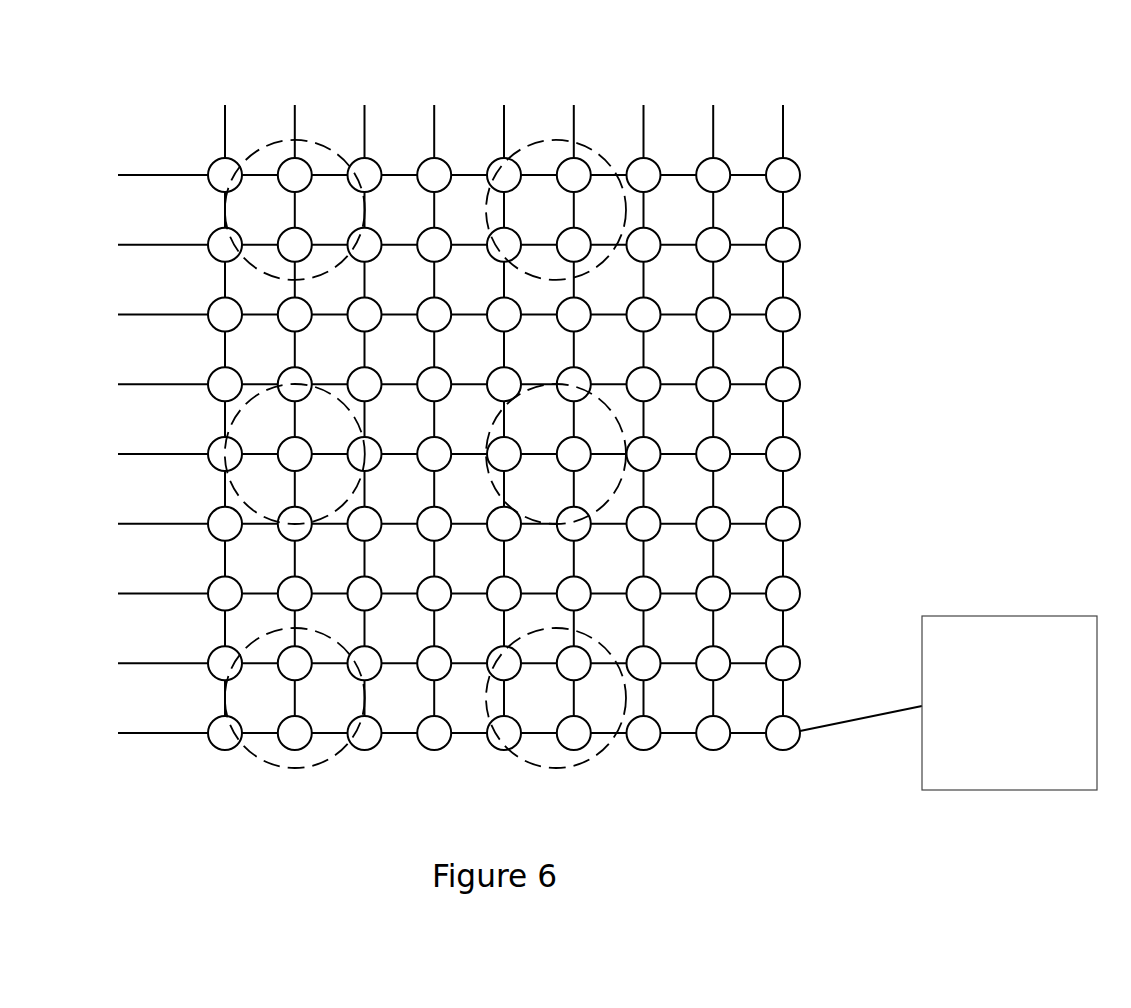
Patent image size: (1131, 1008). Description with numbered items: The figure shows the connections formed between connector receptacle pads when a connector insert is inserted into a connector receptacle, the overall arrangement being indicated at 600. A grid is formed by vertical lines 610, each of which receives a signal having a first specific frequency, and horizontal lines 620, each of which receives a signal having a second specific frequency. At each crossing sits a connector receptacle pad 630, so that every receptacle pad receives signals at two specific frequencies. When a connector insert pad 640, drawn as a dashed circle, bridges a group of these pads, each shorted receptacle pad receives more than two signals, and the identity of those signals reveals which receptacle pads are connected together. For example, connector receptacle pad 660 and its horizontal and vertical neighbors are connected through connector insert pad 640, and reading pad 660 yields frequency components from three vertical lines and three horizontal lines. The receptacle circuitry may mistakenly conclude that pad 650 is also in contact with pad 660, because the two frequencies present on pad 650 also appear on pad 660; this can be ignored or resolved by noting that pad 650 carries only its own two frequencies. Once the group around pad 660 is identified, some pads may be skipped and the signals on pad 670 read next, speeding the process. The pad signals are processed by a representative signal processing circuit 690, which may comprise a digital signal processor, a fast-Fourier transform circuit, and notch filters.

The frequency channel grid system 600 is at (936, 60).
The vertical line 610 is at (225, 132).
The horizontal line 620 is at (143, 176).
The connector receptacle pad 630 is at (214, 163).
The connector insert pad 640 is at (240, 497).
The connector receptacle pad 650 is at (376, 394).
The connector receptacle pad 660 is at (309, 419).
The connector receptacle pad 670 is at (518, 424).
The signal processing circuit 690 is at (1009, 703).